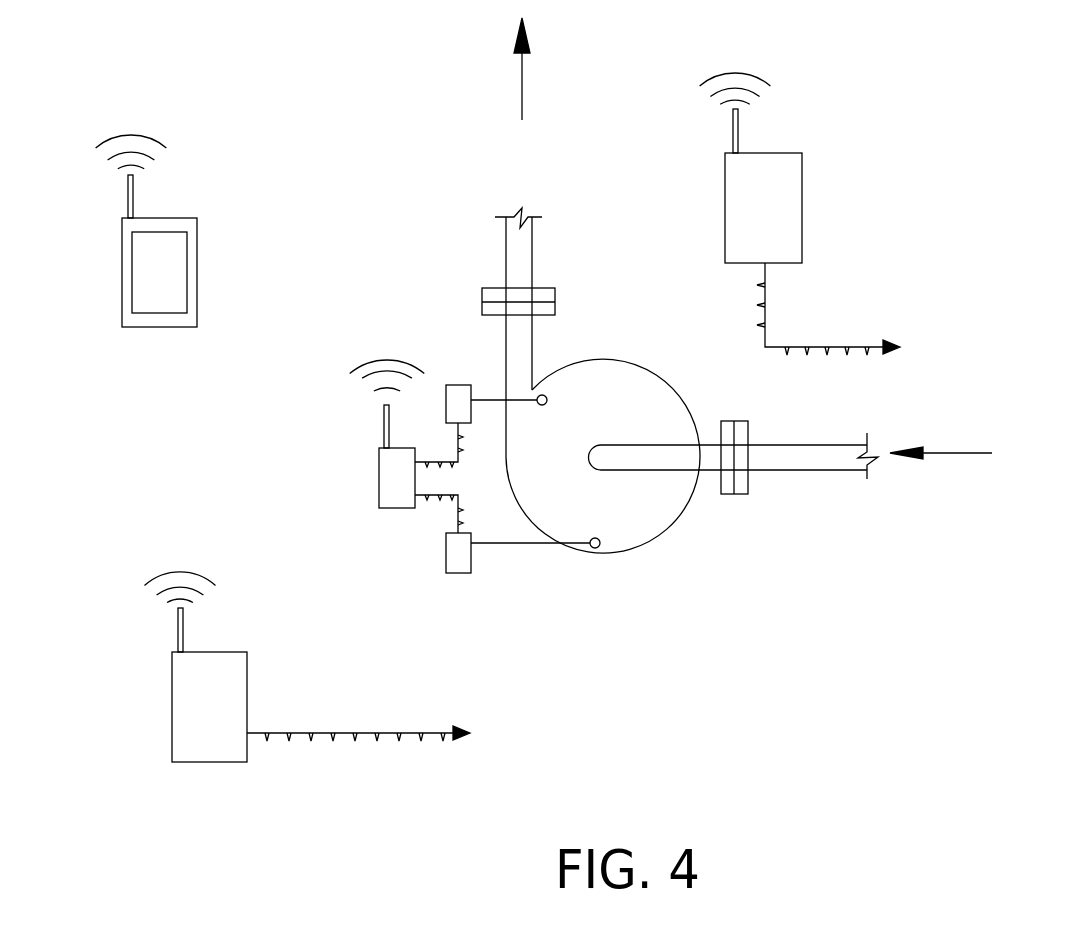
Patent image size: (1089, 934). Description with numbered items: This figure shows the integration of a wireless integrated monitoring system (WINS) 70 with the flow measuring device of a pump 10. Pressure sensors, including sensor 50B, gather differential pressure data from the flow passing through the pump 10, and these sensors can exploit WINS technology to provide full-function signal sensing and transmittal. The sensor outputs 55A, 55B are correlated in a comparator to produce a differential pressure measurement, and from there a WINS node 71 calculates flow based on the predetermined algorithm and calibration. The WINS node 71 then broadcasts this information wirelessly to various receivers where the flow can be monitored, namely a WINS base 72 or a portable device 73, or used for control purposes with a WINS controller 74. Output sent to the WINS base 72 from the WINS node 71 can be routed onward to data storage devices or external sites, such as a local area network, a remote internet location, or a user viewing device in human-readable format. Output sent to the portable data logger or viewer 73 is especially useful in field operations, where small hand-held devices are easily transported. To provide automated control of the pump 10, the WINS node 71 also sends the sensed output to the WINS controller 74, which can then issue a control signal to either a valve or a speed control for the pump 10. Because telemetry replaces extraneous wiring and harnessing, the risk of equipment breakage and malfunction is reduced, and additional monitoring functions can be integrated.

The pump 10 is at (633, 383).
The sensor 50B is at (600, 543).
The sensor output 55A is at (460, 385).
The sensor output 55B is at (471, 562).
The monitoring system 70 is at (927, 152).
The WINS node 71 is at (379, 497).
The WINS base 72 is at (225, 690).
The portable device 73 is at (150, 292).
The WINS controller 74 is at (742, 204).